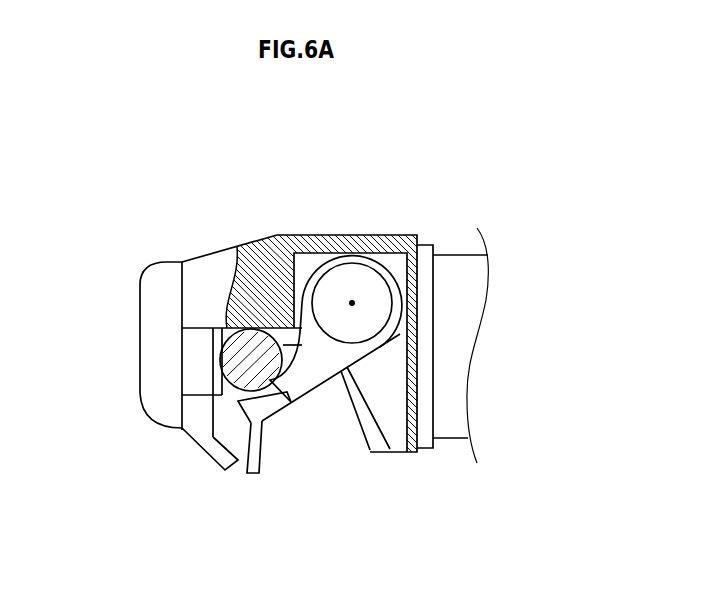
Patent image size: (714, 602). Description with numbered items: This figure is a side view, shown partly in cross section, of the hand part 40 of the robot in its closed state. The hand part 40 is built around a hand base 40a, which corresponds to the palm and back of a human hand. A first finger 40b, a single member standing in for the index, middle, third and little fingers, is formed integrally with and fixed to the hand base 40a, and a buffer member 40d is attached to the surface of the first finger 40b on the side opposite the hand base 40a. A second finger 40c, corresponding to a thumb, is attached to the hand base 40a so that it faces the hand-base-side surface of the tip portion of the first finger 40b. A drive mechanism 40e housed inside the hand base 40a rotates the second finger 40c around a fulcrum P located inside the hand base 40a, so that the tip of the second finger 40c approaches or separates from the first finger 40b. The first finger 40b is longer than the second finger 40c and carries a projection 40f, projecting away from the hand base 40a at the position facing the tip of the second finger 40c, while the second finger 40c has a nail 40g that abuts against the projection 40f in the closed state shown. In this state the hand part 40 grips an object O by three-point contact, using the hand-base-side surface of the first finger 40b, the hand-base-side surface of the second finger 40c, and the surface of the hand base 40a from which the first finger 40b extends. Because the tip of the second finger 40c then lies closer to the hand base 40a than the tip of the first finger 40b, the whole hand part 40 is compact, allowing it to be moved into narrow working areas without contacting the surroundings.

The hand part 40 is at (193, 131).
The hand base 40a is at (257, 238).
The first finger 40b is at (193, 380).
The second finger 40c is at (312, 388).
The buffer member 40d is at (141, 380).
The drive mechanism 40e is at (345, 332).
The projection 40f is at (183, 440).
The nail 40g is at (253, 476).
The object O is at (235, 360).
The fulcrum P is at (352, 303).